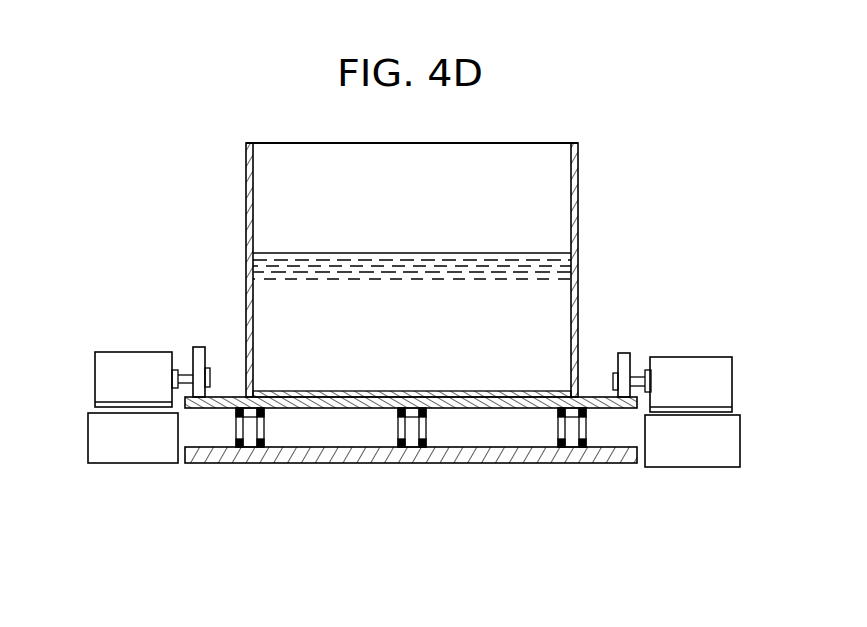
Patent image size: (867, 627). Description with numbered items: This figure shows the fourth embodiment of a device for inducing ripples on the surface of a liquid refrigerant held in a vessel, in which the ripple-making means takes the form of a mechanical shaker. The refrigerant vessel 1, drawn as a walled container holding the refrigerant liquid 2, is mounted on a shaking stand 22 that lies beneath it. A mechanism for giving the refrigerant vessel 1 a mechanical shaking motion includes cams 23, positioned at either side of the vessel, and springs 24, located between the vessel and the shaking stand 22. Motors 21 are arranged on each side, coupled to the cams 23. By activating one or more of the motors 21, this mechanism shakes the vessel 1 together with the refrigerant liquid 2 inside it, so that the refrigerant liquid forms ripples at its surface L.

The refrigerant vessel 1 is at (578, 190).
The liquid 2 is at (453, 331).
The surface L is at (362, 265).
The motor 21 is at (135, 362).
The shaking stand 22 is at (477, 466).
The cam 23 is at (200, 347).
The spring 24 is at (265, 425).